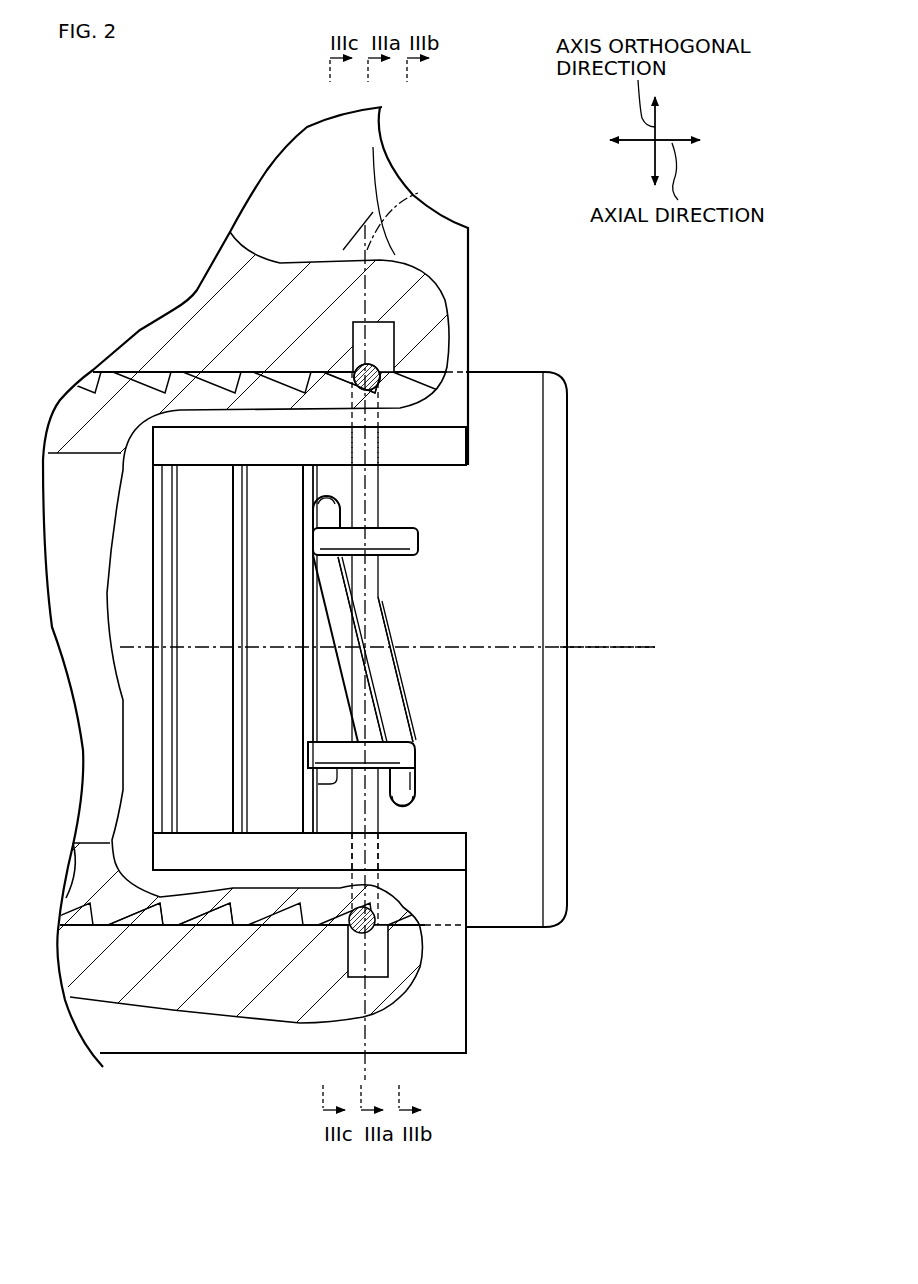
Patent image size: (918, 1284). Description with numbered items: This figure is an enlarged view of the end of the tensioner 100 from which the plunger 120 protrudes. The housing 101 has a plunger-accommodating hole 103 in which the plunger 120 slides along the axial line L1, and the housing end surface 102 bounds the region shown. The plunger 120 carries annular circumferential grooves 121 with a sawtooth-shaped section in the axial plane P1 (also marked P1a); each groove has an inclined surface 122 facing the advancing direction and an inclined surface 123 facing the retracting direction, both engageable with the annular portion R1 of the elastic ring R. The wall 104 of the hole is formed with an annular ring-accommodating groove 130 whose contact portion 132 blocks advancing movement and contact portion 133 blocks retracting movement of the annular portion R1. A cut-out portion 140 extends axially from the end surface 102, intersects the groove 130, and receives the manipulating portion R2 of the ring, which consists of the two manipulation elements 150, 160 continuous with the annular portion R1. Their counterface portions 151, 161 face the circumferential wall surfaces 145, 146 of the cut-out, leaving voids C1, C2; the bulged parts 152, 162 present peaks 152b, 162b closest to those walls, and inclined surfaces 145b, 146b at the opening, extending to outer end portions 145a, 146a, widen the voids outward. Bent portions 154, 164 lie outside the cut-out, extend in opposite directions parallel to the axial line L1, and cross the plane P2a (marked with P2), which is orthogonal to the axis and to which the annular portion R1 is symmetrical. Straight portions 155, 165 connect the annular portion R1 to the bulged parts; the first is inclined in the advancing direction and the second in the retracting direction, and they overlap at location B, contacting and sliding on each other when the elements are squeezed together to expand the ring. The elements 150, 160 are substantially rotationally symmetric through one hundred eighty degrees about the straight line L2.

The tensioner 100 is at (478, 126).
The housing 101 is at (135, 1062).
The end surface 102 is at (466, 893).
The plunger-accommodating hole 103 is at (225, 917).
The wall 104 is at (400, 922).
The plunger 120 is at (546, 366).
The annular circumferential grooves 121 is at (213, 380).
The inclined surface 122 is at (351, 372).
The inclined surface 123 is at (392, 370).
The ring-accommodating groove 130 is at (384, 955).
The contact portion 132 is at (394, 327).
The contact portion 133 is at (352, 322).
The cut-out portion 140 is at (198, 811).
The wall surface 145 is at (436, 830).
The outer end portion 145a is at (182, 870).
The inclined surface 145b is at (437, 851).
The wall surface 146 is at (437, 468).
The outer end portion 146a is at (197, 429).
The inclined surface 146b is at (432, 444).
The manipulation element 150 is at (394, 703).
The counterface portion 151 is at (426, 758).
The bulged part 152 is at (400, 790).
The peak 152b is at (402, 805).
The bent portion 154 is at (336, 772).
The first straight portion 155 is at (382, 676).
The manipulation element 160 is at (285, 587).
The counterface portion 161 is at (301, 538).
The bulged part 162 is at (323, 513).
The peak 162b is at (315, 500).
The bent portion 164 is at (397, 527).
The second straight portion 165 is at (342, 617).
The overlap location B is at (336, 684).
The elastic ring R is at (438, 523).
The annular portion R1 is at (376, 362).
The manipulating portion R2 is at (395, 669).
The void C1 is at (402, 818).
The void C2 is at (337, 476).
The axial line L1 is at (132, 645).
The straight line L2 is at (369, 646).
The pitch point P1a is at (626, 617).
The axial plane P1 is at (633, 645).
The plane P2a is at (448, 214).
The pitch circle P2 is at (415, 197).